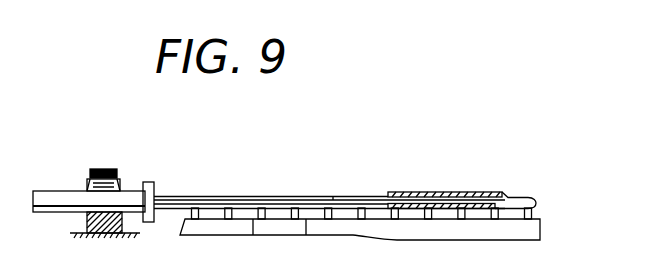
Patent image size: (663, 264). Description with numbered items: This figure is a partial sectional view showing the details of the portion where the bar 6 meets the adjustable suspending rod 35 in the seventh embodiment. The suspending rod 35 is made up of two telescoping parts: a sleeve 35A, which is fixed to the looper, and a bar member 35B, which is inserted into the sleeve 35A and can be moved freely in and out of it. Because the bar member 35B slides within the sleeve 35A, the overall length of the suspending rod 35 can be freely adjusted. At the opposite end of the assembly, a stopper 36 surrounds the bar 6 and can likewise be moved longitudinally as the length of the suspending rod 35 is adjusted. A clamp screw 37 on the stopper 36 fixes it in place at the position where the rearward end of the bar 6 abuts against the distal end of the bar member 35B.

The bar 6 is at (270, 197).
The suspending rod 35 is at (458, 162).
The sleeve 35A is at (418, 192).
The bar member 35B is at (376, 196).
The stopper 36 is at (130, 201).
The clamp screw 37 is at (84, 171).